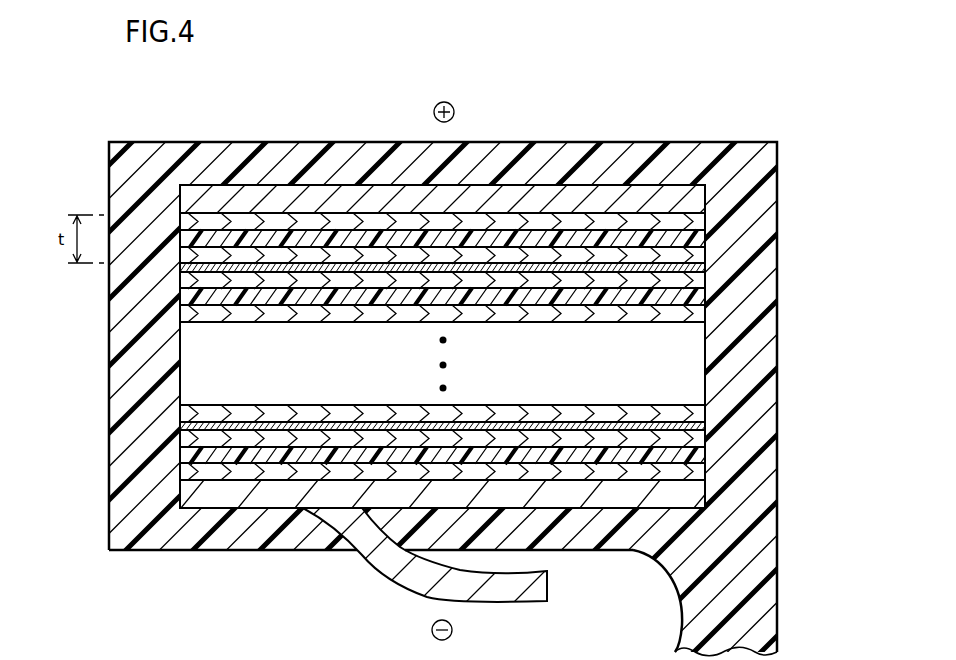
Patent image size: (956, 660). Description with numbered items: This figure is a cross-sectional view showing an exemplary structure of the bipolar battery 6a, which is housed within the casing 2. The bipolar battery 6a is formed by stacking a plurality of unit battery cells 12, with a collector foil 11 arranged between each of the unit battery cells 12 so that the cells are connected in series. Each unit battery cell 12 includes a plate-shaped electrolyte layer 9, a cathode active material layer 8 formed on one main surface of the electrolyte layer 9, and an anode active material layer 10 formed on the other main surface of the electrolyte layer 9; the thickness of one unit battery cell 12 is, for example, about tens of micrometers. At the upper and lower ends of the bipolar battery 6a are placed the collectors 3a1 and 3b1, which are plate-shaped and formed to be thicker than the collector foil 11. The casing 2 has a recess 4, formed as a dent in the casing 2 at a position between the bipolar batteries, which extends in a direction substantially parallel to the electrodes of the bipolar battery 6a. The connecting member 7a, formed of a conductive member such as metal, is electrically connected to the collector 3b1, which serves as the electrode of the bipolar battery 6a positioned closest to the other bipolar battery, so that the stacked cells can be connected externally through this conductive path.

The casing 2 is at (133, 354).
The recess 4 is at (204, 552).
The collector 3a1 is at (313, 200).
The collector 3b1 is at (270, 495).
The bipolar battery 6a is at (609, 97).
The connecting member 7a is at (515, 587).
The cathode active material layer 8 is at (680, 224).
The electrolyte layer 9 is at (680, 240).
The anode active material layer 10 is at (680, 255).
The collector foil 11 is at (190, 267).
The unit battery cell 12 is at (826, 205).